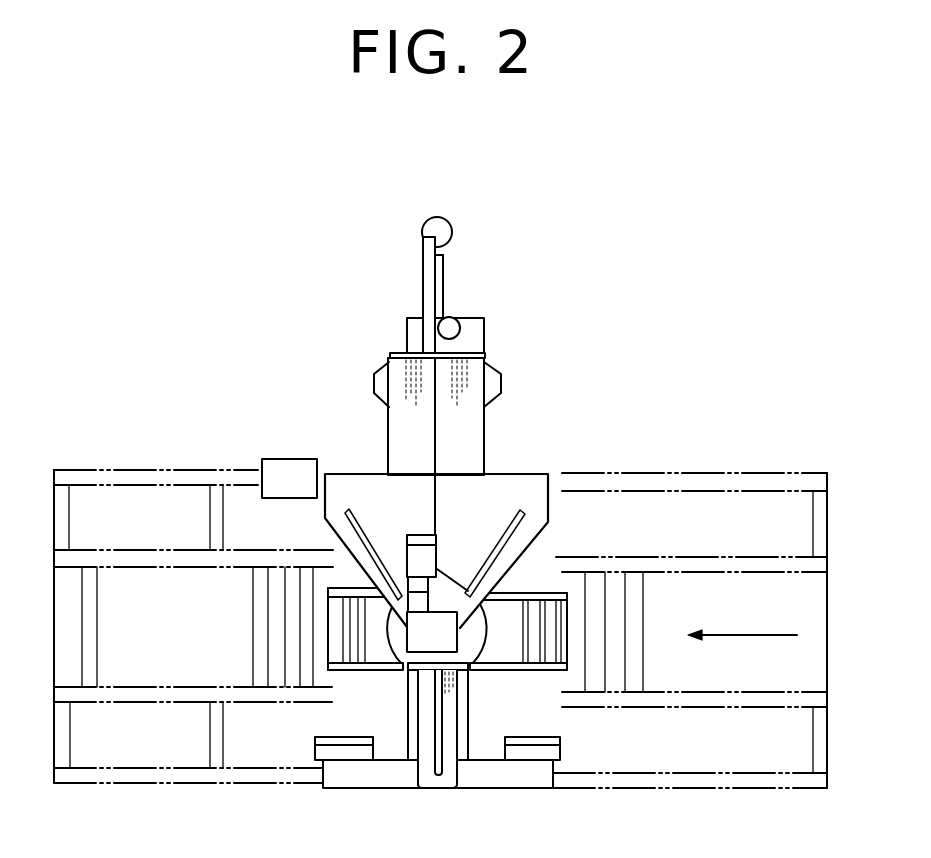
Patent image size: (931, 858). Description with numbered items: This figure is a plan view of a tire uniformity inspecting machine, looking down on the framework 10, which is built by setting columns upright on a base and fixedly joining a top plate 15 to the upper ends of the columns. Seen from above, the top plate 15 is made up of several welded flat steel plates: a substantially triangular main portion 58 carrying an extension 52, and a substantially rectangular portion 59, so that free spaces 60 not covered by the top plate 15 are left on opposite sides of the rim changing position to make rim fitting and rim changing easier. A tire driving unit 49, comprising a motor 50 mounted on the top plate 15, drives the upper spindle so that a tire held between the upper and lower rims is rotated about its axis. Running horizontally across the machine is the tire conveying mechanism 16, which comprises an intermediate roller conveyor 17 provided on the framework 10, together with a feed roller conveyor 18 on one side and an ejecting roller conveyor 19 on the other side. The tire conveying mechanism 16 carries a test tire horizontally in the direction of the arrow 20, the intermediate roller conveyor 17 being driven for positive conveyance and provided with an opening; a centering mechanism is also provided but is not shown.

The framework 10 is at (471, 434).
The top plate 15 is at (558, 484).
The tire conveying mechanism 16 is at (724, 795).
The intermediate roller conveyor 17 is at (383, 672).
The feed roller conveyor 18 is at (688, 700).
The ejecting roller conveyor 19 is at (188, 704).
The arrow 20 is at (742, 619).
The tire driving unit 49 is at (450, 539).
The motor 50 is at (407, 552).
The extension 52 is at (472, 423).
The main portion 58 is at (533, 515).
The rectangular portion 59 is at (428, 762).
The free spaces 60 is at (505, 670).